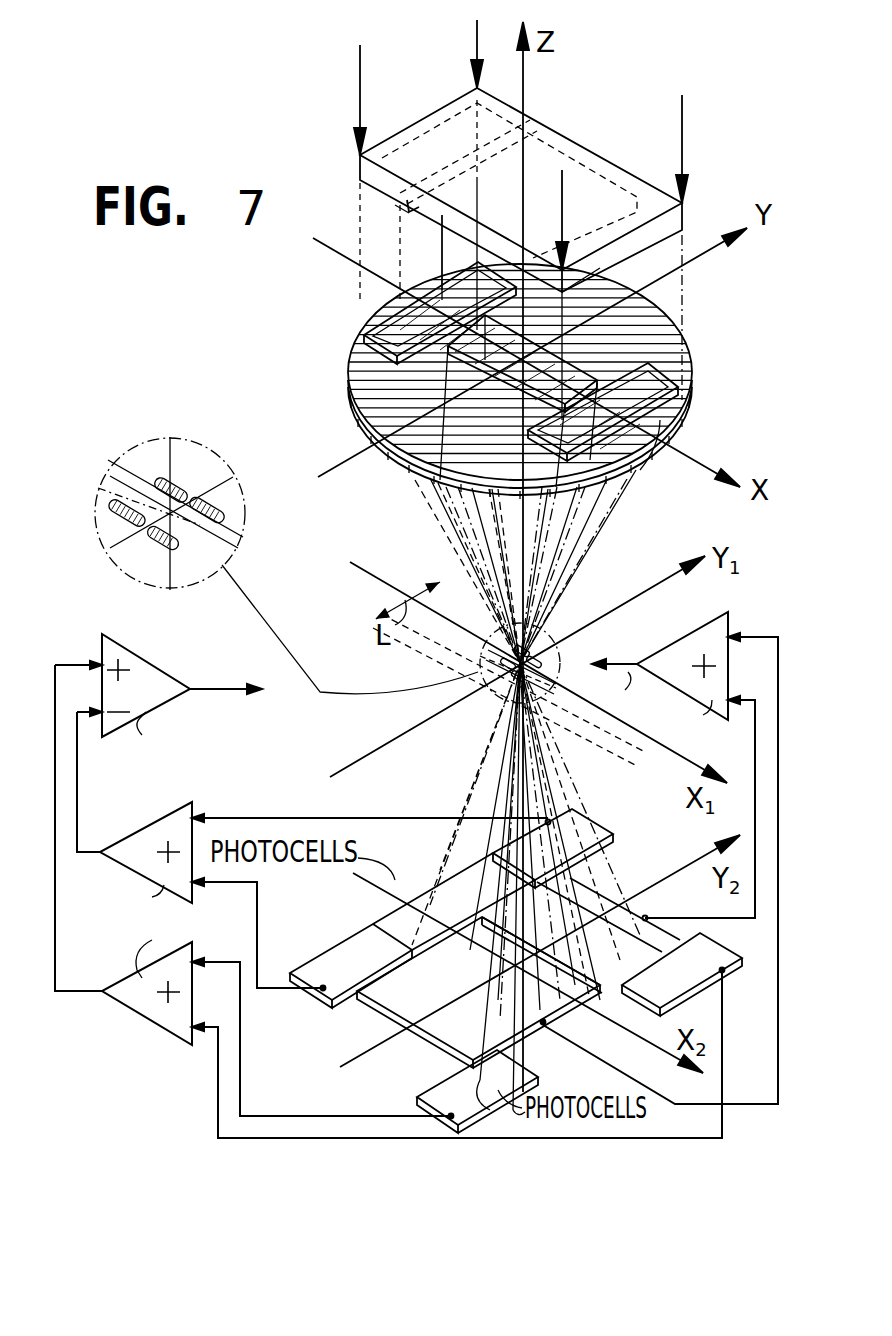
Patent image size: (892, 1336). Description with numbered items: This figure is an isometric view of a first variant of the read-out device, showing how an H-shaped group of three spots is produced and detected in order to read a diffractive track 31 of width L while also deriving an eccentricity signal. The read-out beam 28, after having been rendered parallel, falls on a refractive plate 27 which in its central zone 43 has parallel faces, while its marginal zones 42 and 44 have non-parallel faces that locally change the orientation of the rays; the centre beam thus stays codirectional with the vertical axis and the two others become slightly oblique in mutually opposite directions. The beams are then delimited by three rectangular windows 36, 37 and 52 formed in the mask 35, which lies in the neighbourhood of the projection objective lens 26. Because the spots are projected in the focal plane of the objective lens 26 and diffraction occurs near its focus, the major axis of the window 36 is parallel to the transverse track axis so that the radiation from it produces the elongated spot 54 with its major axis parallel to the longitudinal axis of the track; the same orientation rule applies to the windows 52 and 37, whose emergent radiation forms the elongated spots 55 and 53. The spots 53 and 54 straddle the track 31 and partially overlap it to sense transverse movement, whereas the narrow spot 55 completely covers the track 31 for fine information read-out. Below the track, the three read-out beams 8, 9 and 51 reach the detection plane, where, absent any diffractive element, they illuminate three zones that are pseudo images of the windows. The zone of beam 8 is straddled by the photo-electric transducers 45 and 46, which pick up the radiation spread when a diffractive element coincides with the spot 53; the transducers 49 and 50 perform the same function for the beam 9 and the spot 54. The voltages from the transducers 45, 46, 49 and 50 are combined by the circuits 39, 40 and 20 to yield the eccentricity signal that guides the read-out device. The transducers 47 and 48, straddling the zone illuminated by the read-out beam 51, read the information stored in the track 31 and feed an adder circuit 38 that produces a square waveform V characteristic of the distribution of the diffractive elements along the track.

The read-out beam 8 is at (612, 546).
The read-out beam 9 is at (412, 520).
The circuit 20 is at (150, 668).
The projection objective lens 26 is at (660, 462).
The refractive plate 27 is at (684, 220).
The read-out beam 28 is at (358, 84).
The diffractive track 31 is at (408, 598).
The mask 35 is at (672, 296).
The rectangular window 36 is at (386, 333).
The rectangular window 37 is at (670, 435).
The adder circuit 38 is at (712, 622).
The circuit 39 is at (160, 815).
The circuit 40 is at (157, 962).
The marginal zone 42 is at (395, 206).
The central zone 43 is at (480, 232).
The marginal zone 44 is at (588, 288).
The photo-electric transducer 45 is at (340, 942).
The photo-electric transducer 46 is at (585, 825).
The photo-electric transducer 47 is at (380, 1010).
The photo-electric transducer 48 is at (640, 915).
The photo-electric transducer 49 is at (420, 1095).
The photo-electric transducer 50 is at (705, 992).
The read-out beam 51 is at (440, 925).
The rectangular window 52 is at (475, 366).
The spot 53 is at (225, 506).
The spot 54 is at (108, 516).
The spot 55 is at (220, 567).